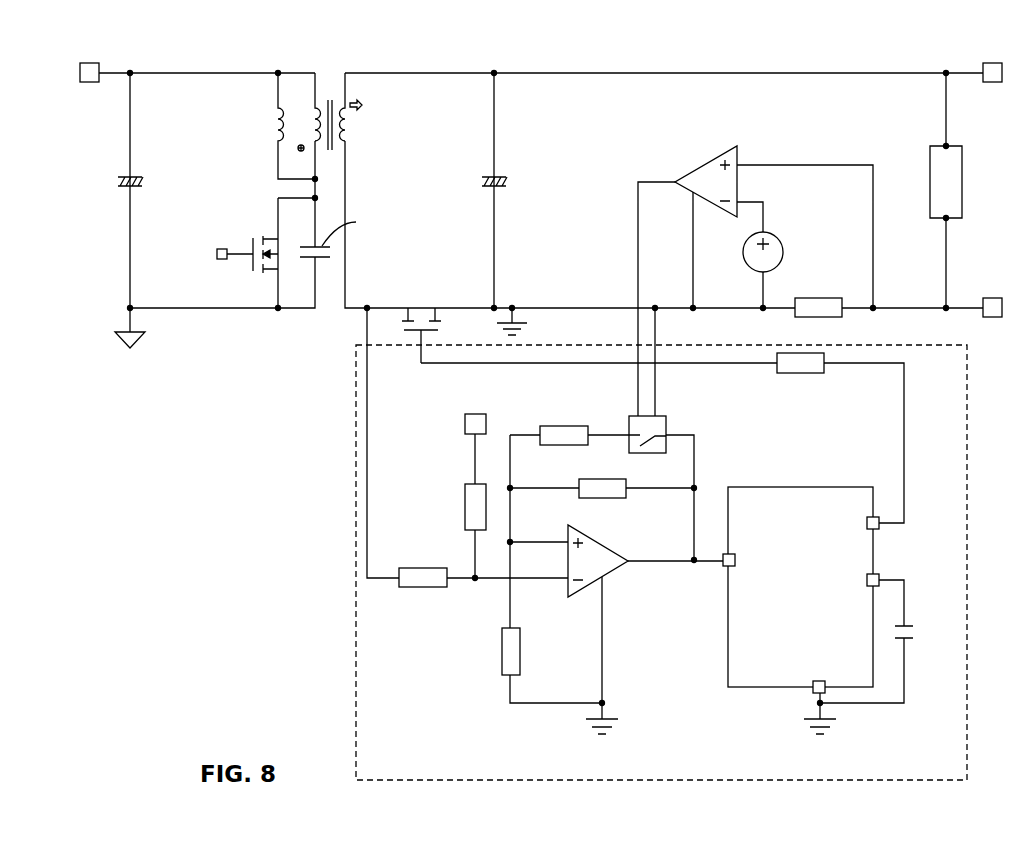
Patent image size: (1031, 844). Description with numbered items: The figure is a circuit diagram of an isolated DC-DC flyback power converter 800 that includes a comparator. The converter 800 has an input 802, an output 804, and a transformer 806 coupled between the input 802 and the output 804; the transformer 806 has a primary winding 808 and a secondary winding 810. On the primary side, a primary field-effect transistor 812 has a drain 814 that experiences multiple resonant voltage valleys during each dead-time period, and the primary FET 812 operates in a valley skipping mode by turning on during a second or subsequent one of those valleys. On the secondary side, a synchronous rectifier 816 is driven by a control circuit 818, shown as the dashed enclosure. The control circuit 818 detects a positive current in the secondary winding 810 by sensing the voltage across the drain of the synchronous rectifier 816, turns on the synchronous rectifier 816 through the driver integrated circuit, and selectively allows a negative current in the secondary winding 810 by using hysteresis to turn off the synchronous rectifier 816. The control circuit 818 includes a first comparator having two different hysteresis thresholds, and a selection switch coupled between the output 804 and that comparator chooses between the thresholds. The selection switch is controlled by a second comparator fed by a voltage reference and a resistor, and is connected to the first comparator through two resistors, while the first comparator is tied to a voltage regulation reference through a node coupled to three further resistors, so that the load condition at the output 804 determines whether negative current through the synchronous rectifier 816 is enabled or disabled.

The isolated DC-DC flyback power converter 800 is at (766, 50).
The input 802 is at (83, 63).
The output 804 is at (987, 63).
The transformer 806 is at (326, 80).
The primary winding 808 is at (268, 106).
The secondary winding 810 is at (360, 122).
The primary field-effect transistor 812 is at (252, 290).
The drain 814 is at (278, 226).
The synchronous rectifier 816 is at (418, 303).
The control circuit 818 is at (356, 660).